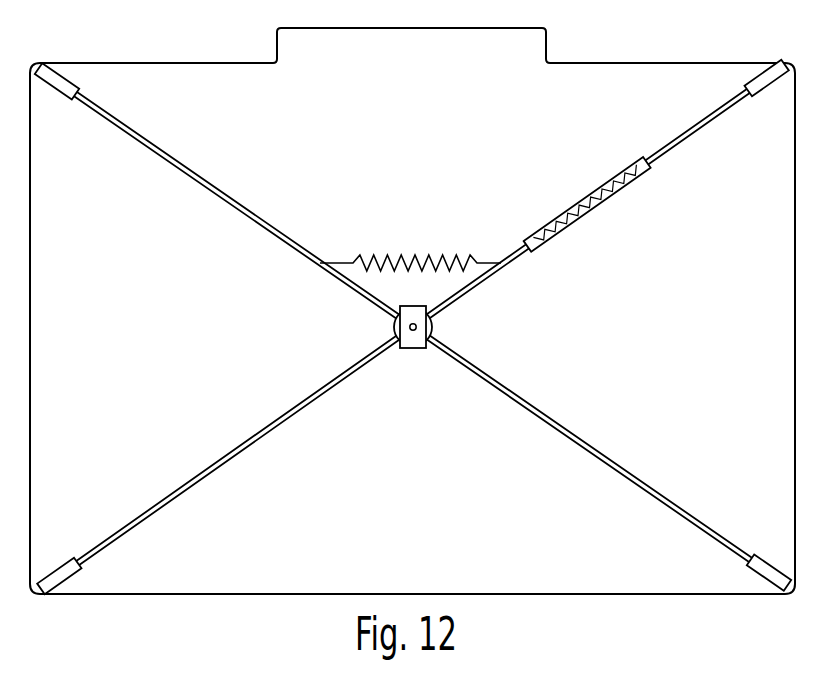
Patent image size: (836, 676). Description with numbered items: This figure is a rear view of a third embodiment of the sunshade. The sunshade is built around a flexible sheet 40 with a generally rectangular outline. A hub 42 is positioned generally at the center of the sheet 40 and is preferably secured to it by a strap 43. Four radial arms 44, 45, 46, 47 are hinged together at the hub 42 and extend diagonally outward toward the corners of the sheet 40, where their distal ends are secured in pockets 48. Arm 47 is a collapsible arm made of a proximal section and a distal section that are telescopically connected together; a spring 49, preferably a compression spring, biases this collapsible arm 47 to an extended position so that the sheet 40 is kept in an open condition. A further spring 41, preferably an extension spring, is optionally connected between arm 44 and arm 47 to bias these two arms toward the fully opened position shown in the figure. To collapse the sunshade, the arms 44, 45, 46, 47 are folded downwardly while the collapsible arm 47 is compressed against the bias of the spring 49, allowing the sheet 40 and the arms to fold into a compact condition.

The flexible sheet 40 is at (571, 70).
The spring 41 is at (410, 262).
The hub 42 is at (437, 327).
The strap 43 is at (415, 350).
The radial arm 44 is at (222, 200).
The radial arm 45 is at (222, 455).
The radial arm 46 is at (602, 452).
The collapsible arm 47 is at (697, 130).
The pocket 48 is at (62, 97).
The spring 49 is at (600, 200).